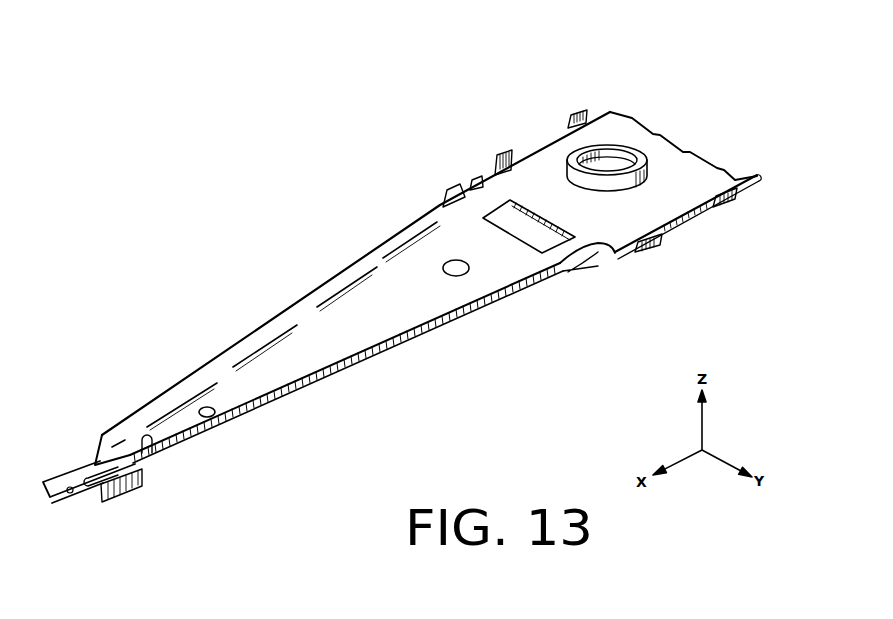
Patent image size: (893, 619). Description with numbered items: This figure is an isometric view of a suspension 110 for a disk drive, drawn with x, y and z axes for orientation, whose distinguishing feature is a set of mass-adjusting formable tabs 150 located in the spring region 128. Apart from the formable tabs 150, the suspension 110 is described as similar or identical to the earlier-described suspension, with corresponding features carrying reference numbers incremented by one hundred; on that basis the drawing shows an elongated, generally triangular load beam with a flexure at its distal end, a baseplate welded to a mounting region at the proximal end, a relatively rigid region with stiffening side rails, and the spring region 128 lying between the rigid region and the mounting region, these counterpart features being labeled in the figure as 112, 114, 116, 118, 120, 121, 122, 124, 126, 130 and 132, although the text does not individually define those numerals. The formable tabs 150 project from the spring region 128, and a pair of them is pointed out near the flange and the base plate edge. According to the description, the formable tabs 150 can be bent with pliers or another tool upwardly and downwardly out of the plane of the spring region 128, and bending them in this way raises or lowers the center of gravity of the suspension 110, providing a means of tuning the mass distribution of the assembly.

The suspension 110 is at (370, 227).
The flange 112 is at (493, 312).
The rail 114 is at (697, 203).
The tab 116 is at (133, 483).
The rib 118 is at (330, 277).
The tip base piece 120 is at (72, 503).
The tip tab 121 is at (145, 407).
The base plate 122 is at (667, 165).
The beam surface 124 is at (383, 313).
The serrated flange edge 126 is at (323, 327).
The spring region 128 is at (497, 200).
The tab 130 is at (728, 202).
The tab 132 is at (677, 223).
The formable tabs 150 is at (477, 177).